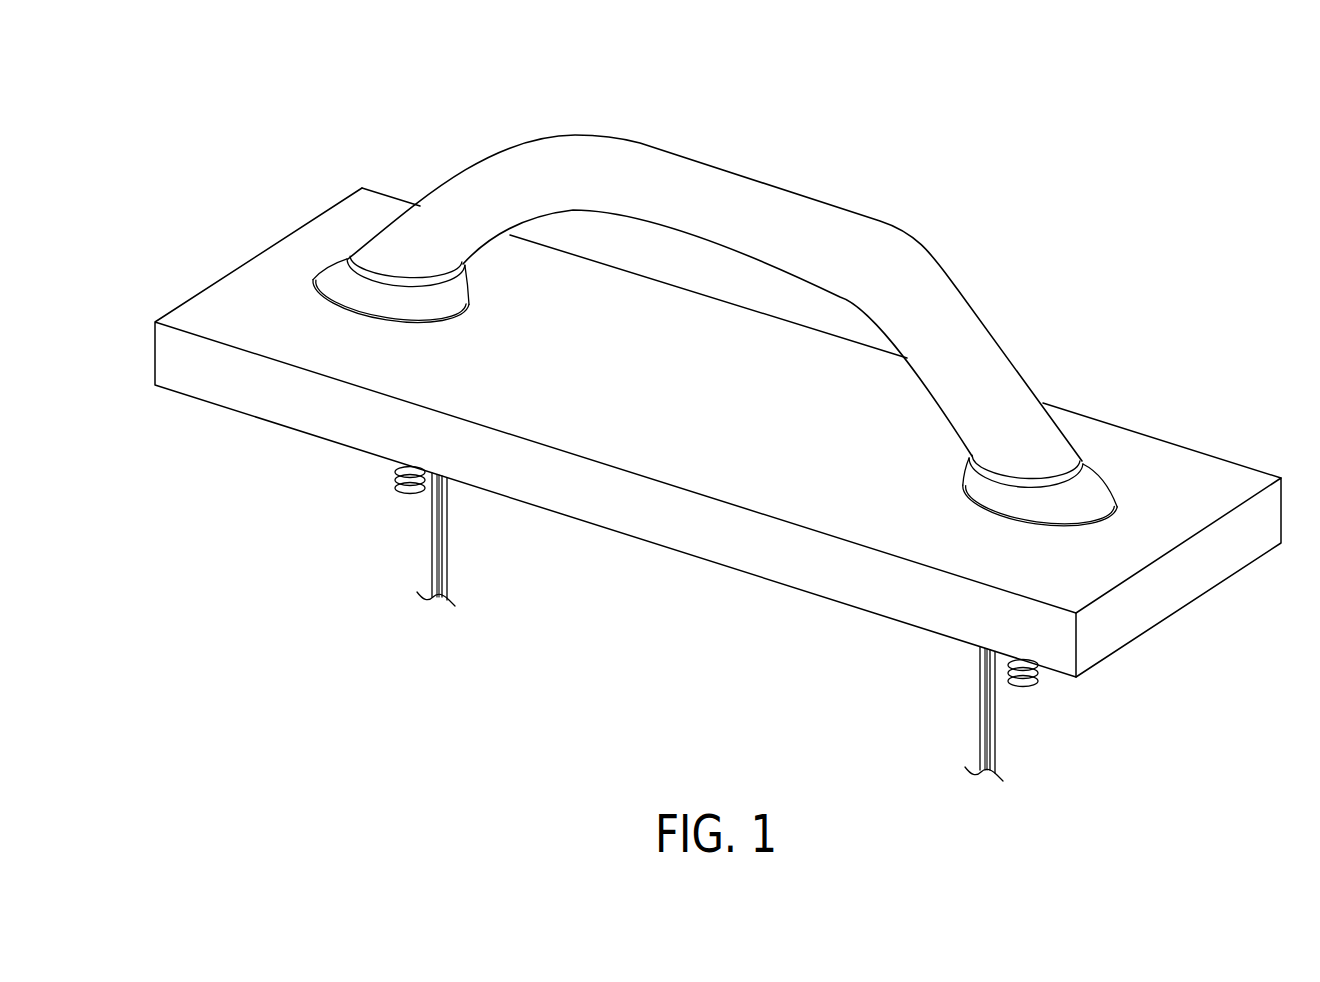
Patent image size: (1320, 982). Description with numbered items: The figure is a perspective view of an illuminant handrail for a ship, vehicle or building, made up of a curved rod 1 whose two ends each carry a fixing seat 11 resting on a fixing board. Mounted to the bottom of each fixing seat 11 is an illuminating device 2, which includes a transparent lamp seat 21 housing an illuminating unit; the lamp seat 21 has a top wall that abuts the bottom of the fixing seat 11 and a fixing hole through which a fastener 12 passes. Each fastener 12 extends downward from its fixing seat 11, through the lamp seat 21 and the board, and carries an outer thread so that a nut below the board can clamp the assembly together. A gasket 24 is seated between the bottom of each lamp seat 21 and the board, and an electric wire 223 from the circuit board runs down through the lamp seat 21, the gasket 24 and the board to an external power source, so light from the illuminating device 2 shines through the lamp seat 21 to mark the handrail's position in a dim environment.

The rod 1 is at (768, 195).
The fixing seat 11 is at (398, 280).
The fastener 12 is at (407, 493).
The illuminating device 2 is at (357, 240).
The lamp seat 21 is at (332, 273).
The gasket 24 is at (322, 302).
The electric wire 223 is at (443, 527).